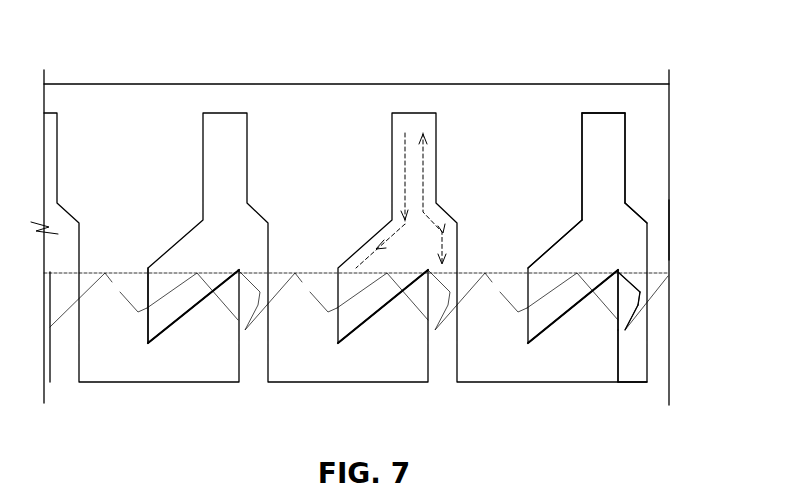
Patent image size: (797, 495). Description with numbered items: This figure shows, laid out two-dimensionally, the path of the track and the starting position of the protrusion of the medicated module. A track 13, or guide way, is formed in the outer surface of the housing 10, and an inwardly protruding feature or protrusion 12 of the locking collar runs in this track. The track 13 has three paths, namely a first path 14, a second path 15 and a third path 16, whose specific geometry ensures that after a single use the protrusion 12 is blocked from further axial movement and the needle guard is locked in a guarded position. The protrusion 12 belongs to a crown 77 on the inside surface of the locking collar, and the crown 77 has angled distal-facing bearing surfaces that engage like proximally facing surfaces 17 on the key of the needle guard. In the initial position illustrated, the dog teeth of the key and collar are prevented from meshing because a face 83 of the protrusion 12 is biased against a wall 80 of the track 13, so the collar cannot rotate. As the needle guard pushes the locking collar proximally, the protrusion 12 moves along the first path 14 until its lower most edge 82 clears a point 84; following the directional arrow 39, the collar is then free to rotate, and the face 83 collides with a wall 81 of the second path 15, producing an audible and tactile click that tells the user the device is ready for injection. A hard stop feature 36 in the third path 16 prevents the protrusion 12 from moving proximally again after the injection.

The housing 10 is at (478, 104).
The directional arrow 39 is at (393, 160).
The hard stop feature 36 is at (148, 268).
The third path 16 is at (575, 258).
The second path 15 is at (603, 137).
The wall of path 81 is at (582, 177).
The track 13 is at (600, 207).
The point on path 84 is at (617, 268).
The first path 14 is at (657, 226).
The crown 77 is at (628, 286).
The face of protrusion 83 is at (618, 308).
The lower most edge 82 is at (620, 325).
The wall of track 80 is at (620, 343).
The protrusion 12 is at (616, 304).
The bearing surfaces 17 is at (608, 358).